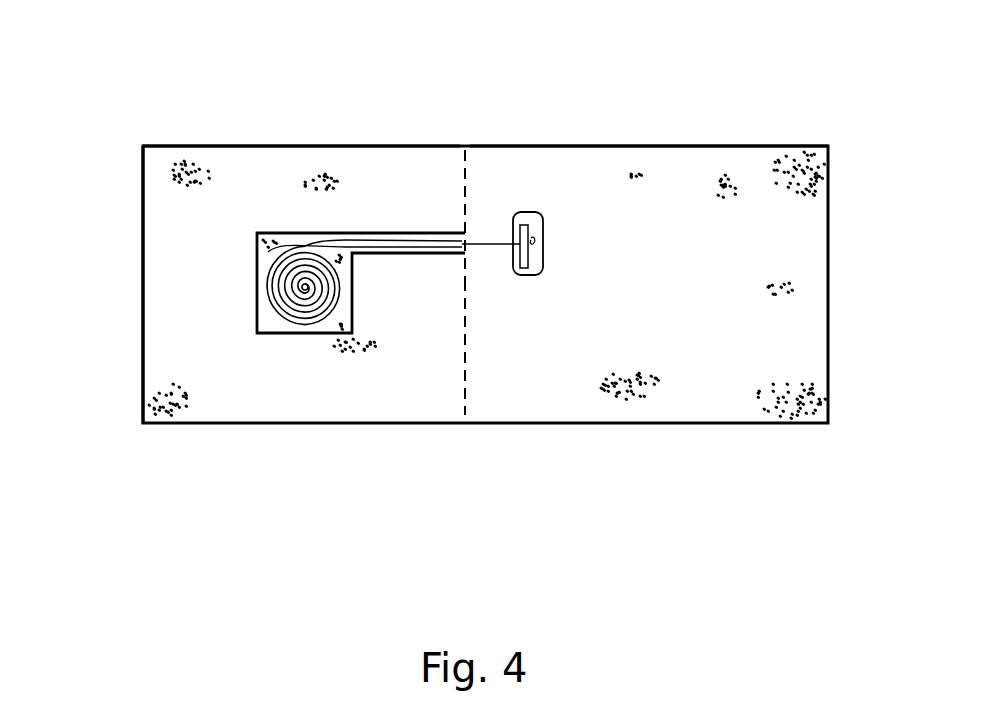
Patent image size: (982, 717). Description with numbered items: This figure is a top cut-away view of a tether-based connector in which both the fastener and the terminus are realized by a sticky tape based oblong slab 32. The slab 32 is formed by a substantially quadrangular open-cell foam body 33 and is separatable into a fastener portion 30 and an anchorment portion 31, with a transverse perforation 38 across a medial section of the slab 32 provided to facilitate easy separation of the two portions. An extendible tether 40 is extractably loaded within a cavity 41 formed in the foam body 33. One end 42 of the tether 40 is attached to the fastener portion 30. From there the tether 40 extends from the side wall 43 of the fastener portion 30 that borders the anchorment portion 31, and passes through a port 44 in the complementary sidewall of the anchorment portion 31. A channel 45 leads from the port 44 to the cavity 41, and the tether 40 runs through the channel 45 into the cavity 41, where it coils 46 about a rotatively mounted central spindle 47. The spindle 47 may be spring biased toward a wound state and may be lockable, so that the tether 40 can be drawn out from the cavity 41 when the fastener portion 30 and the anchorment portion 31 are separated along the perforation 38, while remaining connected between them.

The fastener portion 30 is at (828, 264).
The anchorment portion 31 is at (143, 272).
The oblong slab 32 is at (178, 146).
The open-cell foam body 33 is at (705, 173).
The transverse perforation 38 is at (466, 199).
The tether 40 is at (507, 215).
The cavity 41 is at (263, 233).
The end of the tether 42 is at (540, 262).
The side wall 43 is at (465, 327).
The port 44 is at (513, 228).
The channel 45 is at (455, 253).
The coils 46 is at (317, 315).
The central spindle 47 is at (310, 283).